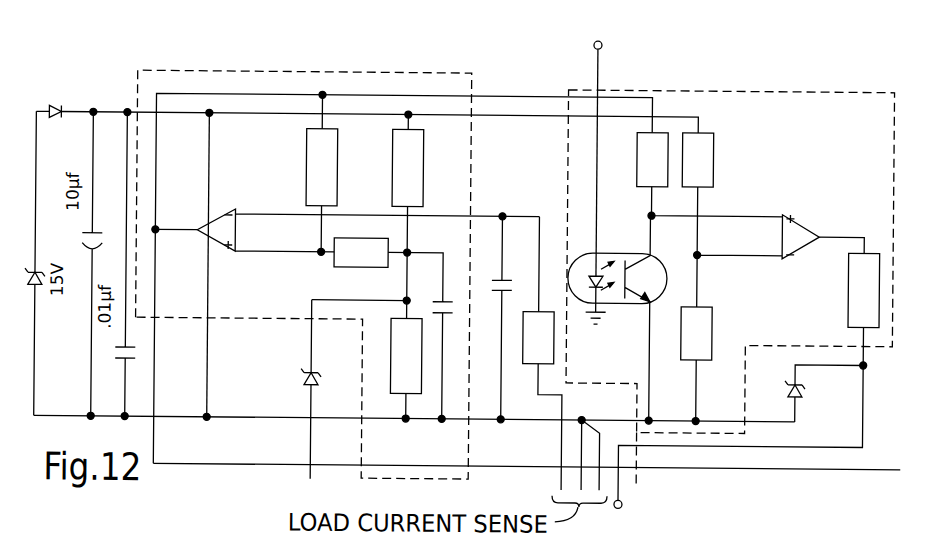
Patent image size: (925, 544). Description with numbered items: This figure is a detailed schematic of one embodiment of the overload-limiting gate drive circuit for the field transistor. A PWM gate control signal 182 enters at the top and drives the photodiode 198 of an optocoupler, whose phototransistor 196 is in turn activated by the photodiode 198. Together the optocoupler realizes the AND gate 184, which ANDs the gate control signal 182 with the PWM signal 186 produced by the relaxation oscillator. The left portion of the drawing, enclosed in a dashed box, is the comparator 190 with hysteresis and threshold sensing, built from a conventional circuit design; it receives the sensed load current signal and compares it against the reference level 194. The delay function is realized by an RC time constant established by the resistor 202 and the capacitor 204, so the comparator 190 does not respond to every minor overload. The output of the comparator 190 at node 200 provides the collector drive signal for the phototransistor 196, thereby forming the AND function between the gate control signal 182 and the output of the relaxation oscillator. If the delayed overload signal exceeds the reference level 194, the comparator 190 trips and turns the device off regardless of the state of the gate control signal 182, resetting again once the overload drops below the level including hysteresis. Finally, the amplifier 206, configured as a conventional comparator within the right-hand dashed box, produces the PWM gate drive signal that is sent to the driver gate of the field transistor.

The gate control signal 182 is at (654, 143).
The AND gate 184 is at (610, 180).
The PWM signal 186 is at (742, 519).
The comparator 190 is at (247, 331).
The reference level 194 is at (405, 299).
The phototransistor 196 is at (627, 252).
The photodiode 198 is at (587, 298).
The node 200 is at (178, 236).
The resistor 202 is at (546, 367).
The capacitor 204 is at (508, 292).
The amplifier 206 is at (803, 88).